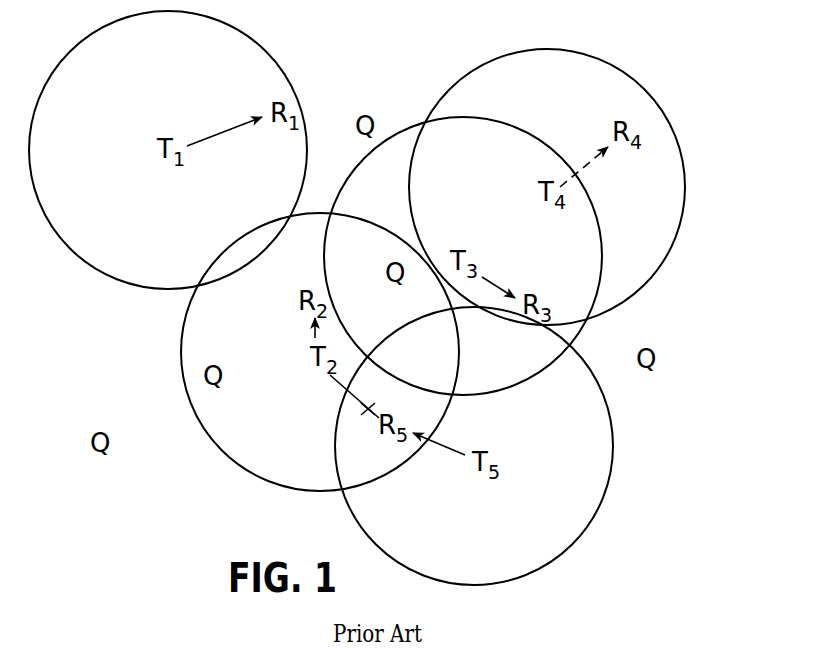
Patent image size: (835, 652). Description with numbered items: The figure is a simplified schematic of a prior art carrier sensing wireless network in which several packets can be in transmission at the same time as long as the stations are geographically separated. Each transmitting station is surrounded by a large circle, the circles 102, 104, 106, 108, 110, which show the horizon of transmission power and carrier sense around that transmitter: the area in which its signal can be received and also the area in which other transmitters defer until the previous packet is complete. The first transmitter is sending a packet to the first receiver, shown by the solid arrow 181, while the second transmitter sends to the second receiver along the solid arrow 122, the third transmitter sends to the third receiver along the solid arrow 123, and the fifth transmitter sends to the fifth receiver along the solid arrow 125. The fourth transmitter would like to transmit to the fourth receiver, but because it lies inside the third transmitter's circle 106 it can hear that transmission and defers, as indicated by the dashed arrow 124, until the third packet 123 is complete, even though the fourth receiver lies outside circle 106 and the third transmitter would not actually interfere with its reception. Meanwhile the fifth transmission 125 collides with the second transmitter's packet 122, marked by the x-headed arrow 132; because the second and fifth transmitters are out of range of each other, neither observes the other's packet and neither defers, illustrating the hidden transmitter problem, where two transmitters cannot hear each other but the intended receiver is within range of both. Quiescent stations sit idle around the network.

The transmission horizon circle 102 is at (290, 37).
The transmission horizon circle 104 is at (218, 448).
The transmission horizon circle 106 is at (368, 155).
The transmission horizon circle 108 is at (685, 187).
The transmission horizon circle 110 is at (613, 433).
The transmission path from transmitter T1 to receiver R1 181 is at (220, 137).
The transmission in progress arrow 122 is at (313, 330).
The transmission in progress arrow 123 is at (513, 263).
The deferred transmission arrow 124 is at (598, 152).
The transmission in progress arrow 125 is at (450, 452).
The interfering transmission arrow 132 is at (338, 382).